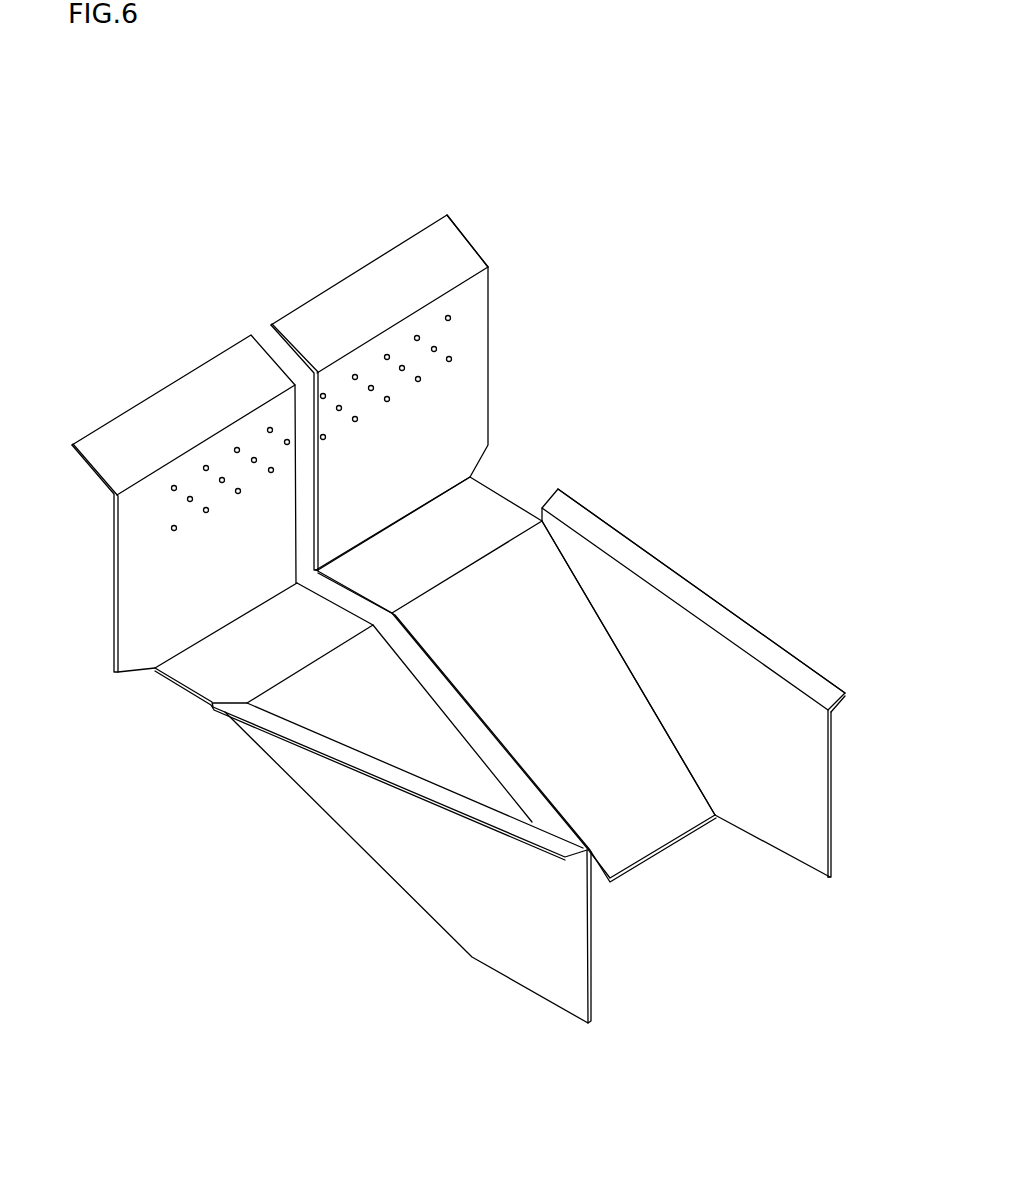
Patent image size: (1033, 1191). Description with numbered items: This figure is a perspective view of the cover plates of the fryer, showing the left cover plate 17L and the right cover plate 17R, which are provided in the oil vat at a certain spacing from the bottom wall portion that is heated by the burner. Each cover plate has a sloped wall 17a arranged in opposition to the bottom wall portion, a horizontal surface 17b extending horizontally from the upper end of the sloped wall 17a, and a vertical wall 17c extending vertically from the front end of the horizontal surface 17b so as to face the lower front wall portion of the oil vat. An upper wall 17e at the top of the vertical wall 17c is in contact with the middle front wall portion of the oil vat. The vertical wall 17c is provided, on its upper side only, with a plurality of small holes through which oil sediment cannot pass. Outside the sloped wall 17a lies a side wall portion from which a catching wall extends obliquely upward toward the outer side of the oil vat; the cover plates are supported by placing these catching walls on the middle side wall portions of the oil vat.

The right cover plate 17R is at (102, 563).
The left cover plate 17L is at (617, 533).
The sloped wall 17a is at (653, 815).
The horizontal surface 17b is at (478, 510).
The vertical wall 17c is at (423, 418).
The upper wall 17e is at (432, 272).